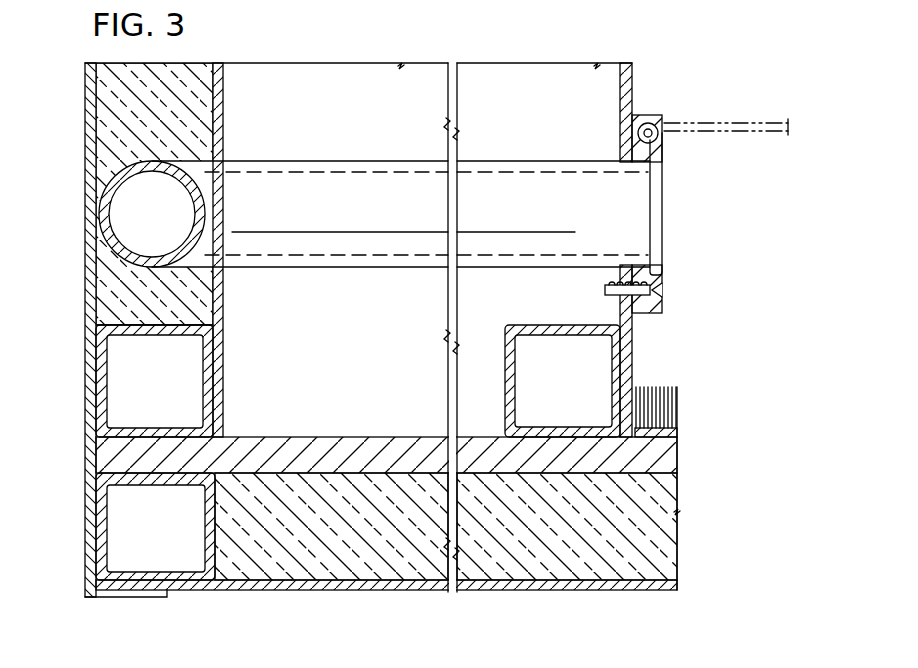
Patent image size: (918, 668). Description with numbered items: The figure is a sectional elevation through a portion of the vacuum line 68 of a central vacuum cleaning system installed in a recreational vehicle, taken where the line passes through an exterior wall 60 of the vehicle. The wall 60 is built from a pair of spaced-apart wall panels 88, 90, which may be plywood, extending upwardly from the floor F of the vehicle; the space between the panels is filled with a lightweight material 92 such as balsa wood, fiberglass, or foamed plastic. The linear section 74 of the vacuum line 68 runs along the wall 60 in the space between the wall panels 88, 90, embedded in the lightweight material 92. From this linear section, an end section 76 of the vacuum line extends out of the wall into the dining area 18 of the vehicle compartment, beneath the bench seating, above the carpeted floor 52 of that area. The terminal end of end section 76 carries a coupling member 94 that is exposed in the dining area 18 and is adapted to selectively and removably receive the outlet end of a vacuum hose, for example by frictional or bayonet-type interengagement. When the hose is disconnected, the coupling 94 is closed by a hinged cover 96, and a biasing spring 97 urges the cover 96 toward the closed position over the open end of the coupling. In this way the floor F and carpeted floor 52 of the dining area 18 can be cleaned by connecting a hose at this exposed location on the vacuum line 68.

The dining area 18 is at (744, 323).
The carpeted floor 52 is at (670, 407).
The exterior wall 60 is at (84, 320).
The vacuum line 68 is at (312, 160).
The linear section 74 is at (200, 197).
The end section 76 is at (492, 160).
The wall panel 88 is at (91, 277).
The wall panel 90 is at (226, 300).
The lightweight material 92 is at (197, 115).
The coupling member 94 is at (649, 112).
The hinged cover 96 is at (657, 207).
The biasing spring 97 is at (655, 148).
The floor F is at (330, 437).